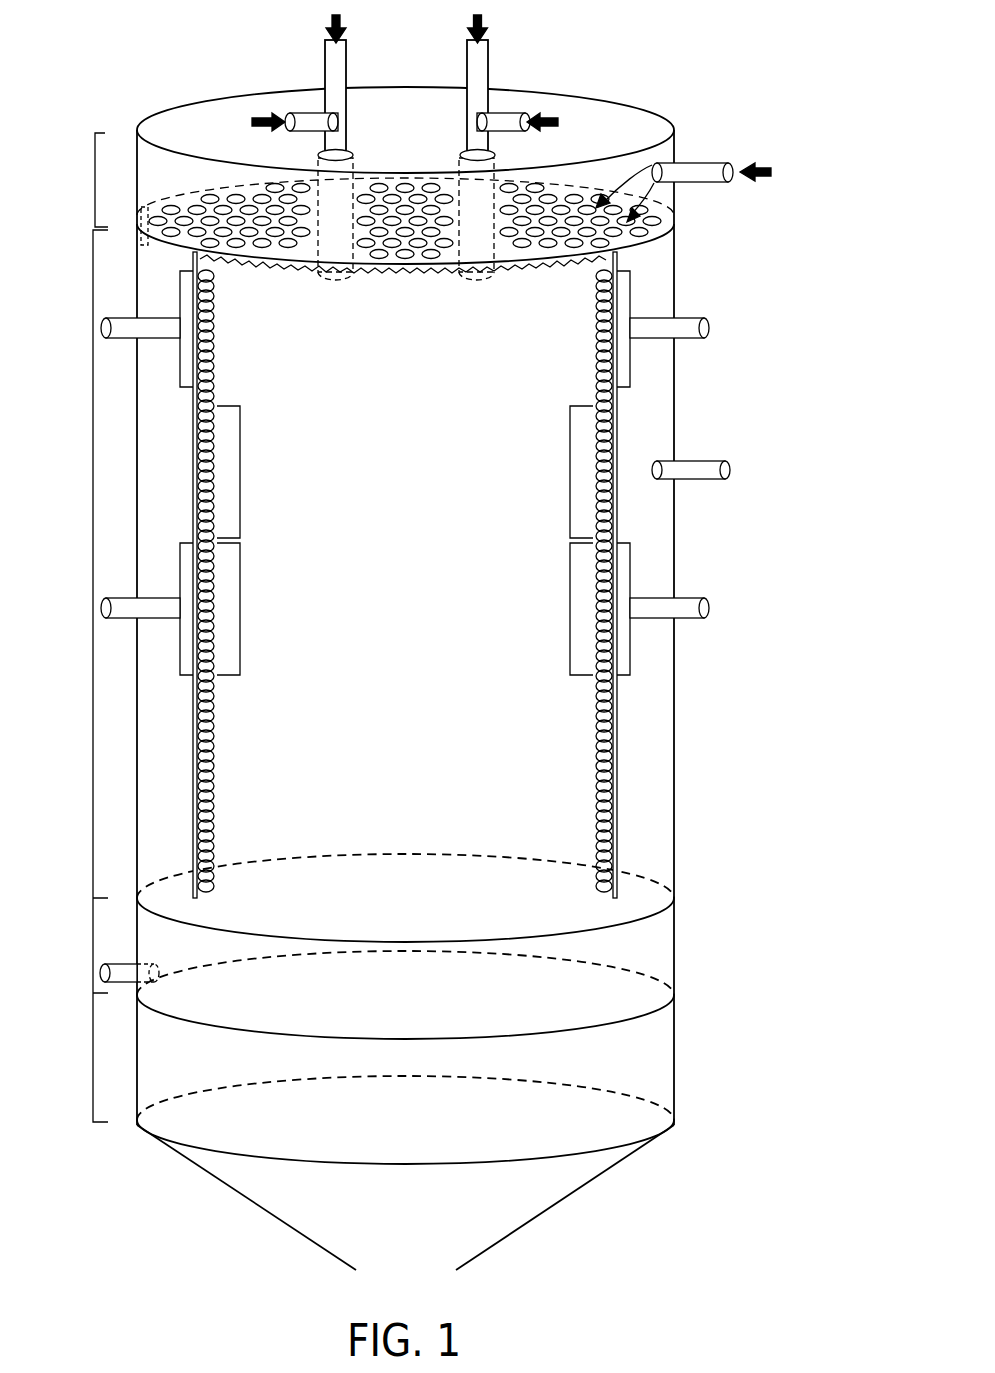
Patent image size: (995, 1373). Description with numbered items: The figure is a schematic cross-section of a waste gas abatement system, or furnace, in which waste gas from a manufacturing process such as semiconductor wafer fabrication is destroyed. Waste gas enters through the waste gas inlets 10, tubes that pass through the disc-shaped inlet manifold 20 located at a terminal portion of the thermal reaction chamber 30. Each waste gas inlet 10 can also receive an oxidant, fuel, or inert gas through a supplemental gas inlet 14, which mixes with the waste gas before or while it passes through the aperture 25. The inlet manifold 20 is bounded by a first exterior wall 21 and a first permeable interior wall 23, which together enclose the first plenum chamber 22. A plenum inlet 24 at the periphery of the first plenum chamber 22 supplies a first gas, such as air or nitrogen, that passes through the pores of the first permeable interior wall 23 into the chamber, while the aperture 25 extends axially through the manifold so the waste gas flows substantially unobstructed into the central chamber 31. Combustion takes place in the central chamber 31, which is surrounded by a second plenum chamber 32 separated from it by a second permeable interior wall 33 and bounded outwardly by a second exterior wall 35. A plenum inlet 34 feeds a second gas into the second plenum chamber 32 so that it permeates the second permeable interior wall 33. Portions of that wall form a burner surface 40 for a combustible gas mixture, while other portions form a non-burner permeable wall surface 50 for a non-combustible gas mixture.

The waste gas inlet 10 is at (340, 15).
The supplemental gas inlet 14 is at (266, 117).
The inlet manifold 20 is at (93, 180).
The first exterior wall 21 is at (672, 118).
The first plenum chamber 22 is at (667, 195).
The first permeable interior wall 23 is at (140, 214).
The plenum inlet 24 is at (697, 172).
The aperture 25 is at (318, 157).
The thermal reaction chamber 30 is at (93, 486).
The central chamber 31 is at (425, 534).
The second plenum chamber 32 is at (640, 806).
The second permeable interior wall 33 is at (216, 786).
The plenum inlet 34 is at (693, 479).
The second exterior wall 35 is at (674, 706).
The burner surface 40 is at (241, 607).
The non-burner permeable wall surface 50 is at (241, 480).